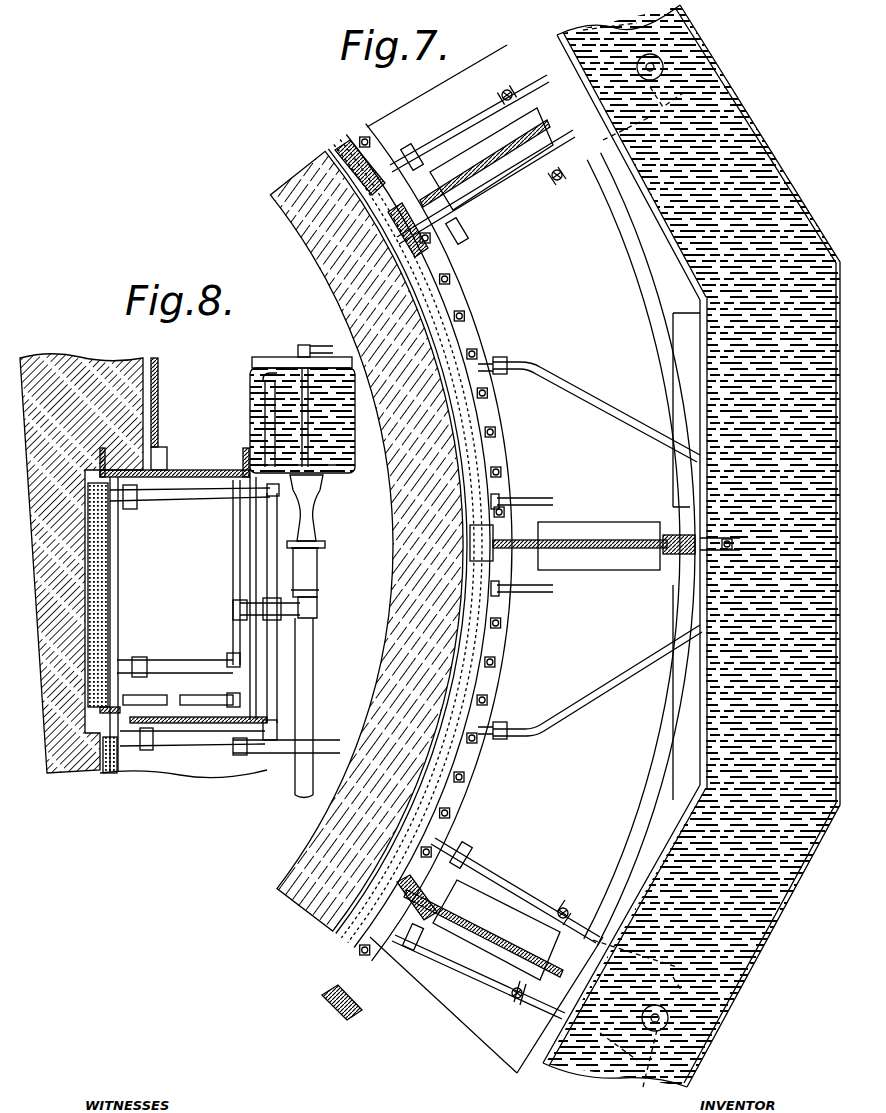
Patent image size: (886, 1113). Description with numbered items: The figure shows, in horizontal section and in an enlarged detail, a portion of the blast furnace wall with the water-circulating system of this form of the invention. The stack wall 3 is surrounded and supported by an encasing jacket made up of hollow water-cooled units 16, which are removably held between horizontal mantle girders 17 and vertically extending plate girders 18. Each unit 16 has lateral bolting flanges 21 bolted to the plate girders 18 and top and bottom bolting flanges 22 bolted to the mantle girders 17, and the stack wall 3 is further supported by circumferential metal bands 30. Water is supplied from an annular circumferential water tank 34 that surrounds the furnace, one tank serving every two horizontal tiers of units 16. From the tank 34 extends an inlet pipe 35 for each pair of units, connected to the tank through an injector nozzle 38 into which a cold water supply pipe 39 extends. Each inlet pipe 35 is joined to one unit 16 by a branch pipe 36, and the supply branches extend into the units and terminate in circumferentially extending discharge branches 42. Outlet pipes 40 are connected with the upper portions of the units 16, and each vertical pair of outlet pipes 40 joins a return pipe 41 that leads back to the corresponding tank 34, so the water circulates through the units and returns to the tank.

In FIG. 7, the stack wall 3 is at (415, 583).
In FIG. 8, the stack wall 3 is at (57, 735).
In FIG. 7, the hollow water-cooled unit 16 is at (448, 296).
In FIG. 8, the hollow water-cooled unit 16 is at (110, 607).
In FIG. 7, the mantle girder 17 is at (642, 549).
In FIG. 8, the mantle girder 17 is at (208, 471).
In FIG. 7, the plate girder 18 is at (620, 552).
In FIG. 8, the plate girder 18 is at (213, 770).
In FIG. 7, the lateral bolting flange 21 is at (513, 568).
In FIG. 7, the top and bottom bolting flange 22 is at (505, 636).
In FIG. 8, the circumferential metal band 30 is at (100, 757).
In FIG. 7, the circumferential water tank 34 is at (755, 143).
In FIG. 8, the circumferential water tank 34 is at (250, 408).
In FIG. 8, the inlet pipe 35 is at (312, 640).
In FIG. 7, the branch pipe 36 is at (466, 123).
In FIG. 8, the branch pipe 36 is at (200, 667).
In FIG. 7, the injector nozzle 38 is at (683, 70).
In FIG. 8, the injector nozzle 38 is at (318, 510).
In FIG. 7, the cold water supply pipe 39 is at (663, 62).
In FIG. 8, the cold water supply pipe 39 is at (320, 347).
In FIG. 7, the outlet pipe 40 is at (613, 408).
In FIG. 8, the outlet pipe 40 is at (193, 498).
In FIG. 7, the return pipe 41 is at (715, 553).
In FIG. 8, the return pipe 41 is at (266, 558).
In FIG. 7, the discharge branch 42 is at (463, 757).
In FIG. 8, the discharge branch 42 is at (105, 687).